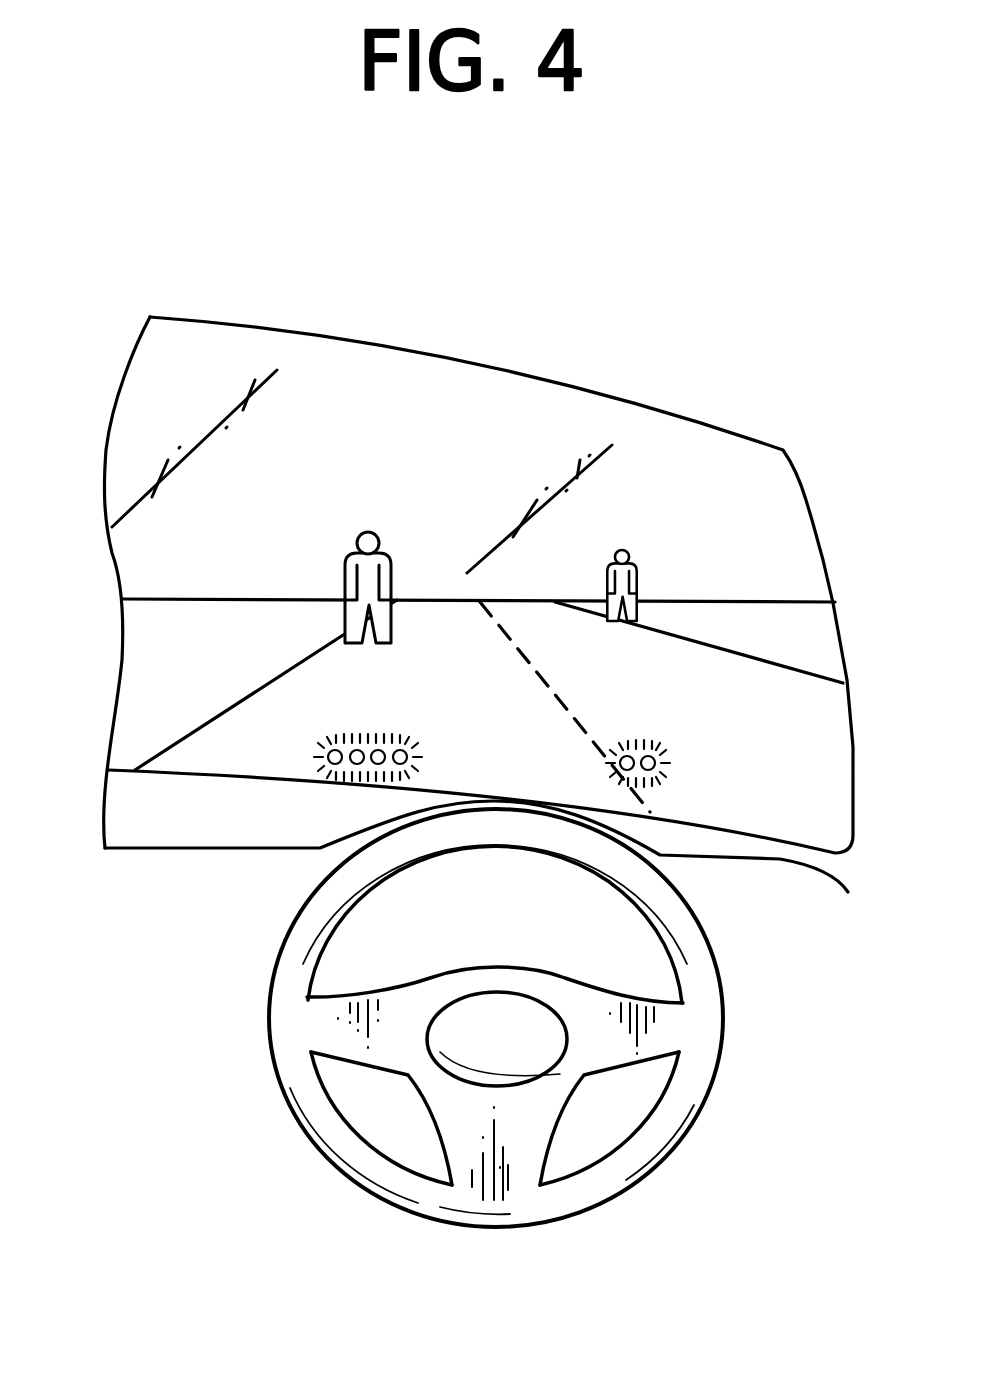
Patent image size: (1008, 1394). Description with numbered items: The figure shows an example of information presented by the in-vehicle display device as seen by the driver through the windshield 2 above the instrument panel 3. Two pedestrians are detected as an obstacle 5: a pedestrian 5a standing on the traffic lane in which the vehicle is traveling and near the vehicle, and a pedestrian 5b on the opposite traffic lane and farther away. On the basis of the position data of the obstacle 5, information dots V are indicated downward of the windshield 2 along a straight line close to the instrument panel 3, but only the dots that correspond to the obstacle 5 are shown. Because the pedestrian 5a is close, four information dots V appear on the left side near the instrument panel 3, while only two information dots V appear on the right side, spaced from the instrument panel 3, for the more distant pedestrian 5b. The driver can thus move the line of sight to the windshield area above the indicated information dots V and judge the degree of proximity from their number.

The windshield 2 is at (723, 467).
The instrument panel 3 is at (180, 815).
The obstacle 5 is at (513, 421).
The pedestrian 5a is at (382, 494).
The pedestrian 5b is at (634, 515).
The information dots V is at (324, 712).